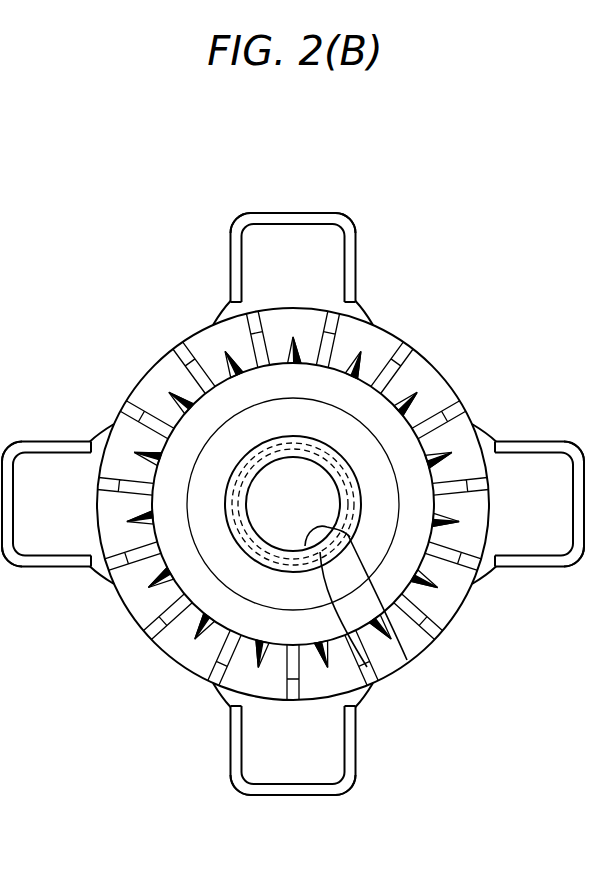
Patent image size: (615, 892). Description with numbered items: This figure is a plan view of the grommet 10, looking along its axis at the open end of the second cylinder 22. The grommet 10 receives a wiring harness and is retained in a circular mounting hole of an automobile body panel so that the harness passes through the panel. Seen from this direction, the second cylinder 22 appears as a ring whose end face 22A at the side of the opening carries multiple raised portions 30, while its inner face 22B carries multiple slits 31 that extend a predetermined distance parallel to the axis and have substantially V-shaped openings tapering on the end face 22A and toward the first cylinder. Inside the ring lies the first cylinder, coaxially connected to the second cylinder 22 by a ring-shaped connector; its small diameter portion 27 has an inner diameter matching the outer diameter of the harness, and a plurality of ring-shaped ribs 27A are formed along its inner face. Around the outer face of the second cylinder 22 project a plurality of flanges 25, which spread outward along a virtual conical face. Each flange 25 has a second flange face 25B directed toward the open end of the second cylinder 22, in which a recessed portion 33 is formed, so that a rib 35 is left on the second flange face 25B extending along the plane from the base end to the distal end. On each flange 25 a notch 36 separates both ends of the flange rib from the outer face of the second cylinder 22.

The grommet 10 is at (506, 252).
The second cylinder 22 is at (420, 320).
The end face 22A is at (232, 324).
The inner face 22B is at (59, 514).
The flange 25 is at (306, 214).
The second flange face 25B is at (256, 215).
The small diameter portion 27 is at (396, 664).
The ring-shaped rib 27A is at (400, 640).
The raised portion 30 is at (145, 405).
The slit 31 is at (348, 378).
The recessed portion 33 is at (322, 250).
The rib 35 is at (362, 268).
The notch 36 is at (231, 300).